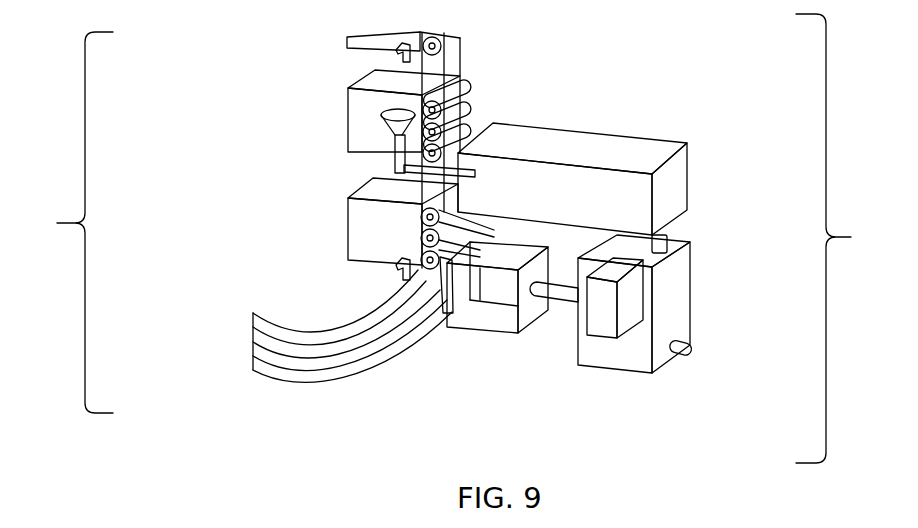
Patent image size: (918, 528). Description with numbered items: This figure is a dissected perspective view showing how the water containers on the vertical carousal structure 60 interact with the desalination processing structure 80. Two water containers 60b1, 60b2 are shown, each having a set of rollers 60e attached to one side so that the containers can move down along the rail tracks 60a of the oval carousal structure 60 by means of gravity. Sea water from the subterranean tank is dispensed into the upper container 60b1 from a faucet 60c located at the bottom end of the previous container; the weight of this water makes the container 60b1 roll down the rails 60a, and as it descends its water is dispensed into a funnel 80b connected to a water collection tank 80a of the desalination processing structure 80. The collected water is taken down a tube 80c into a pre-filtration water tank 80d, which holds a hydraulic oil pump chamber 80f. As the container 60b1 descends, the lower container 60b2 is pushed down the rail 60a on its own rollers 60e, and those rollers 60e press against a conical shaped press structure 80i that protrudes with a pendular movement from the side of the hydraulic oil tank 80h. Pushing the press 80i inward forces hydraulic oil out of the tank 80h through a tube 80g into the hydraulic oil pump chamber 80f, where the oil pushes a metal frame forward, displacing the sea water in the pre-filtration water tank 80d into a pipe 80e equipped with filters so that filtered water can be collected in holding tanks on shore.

The carousal structure 60 is at (68, 222).
The rail tracks 60a is at (243, 342).
The water container 60b1 is at (339, 109).
The water container 60b2 is at (339, 231).
The faucet 60c is at (388, 61).
The rollers 60e is at (482, 106).
The desalination processing structure 80 is at (840, 238).
The water collection tank 80a is at (607, 124).
The funnel 80b is at (386, 158).
The tube 80c is at (679, 232).
The pre-filtration water tank 80d is at (706, 296).
The pipe 80e is at (706, 353).
The hydraulic oil pump chamber 80f is at (608, 351).
The tube 80g is at (558, 307).
The hydraulic oil tank 80h is at (497, 342).
The conical shaped press structure 80i is at (450, 319).